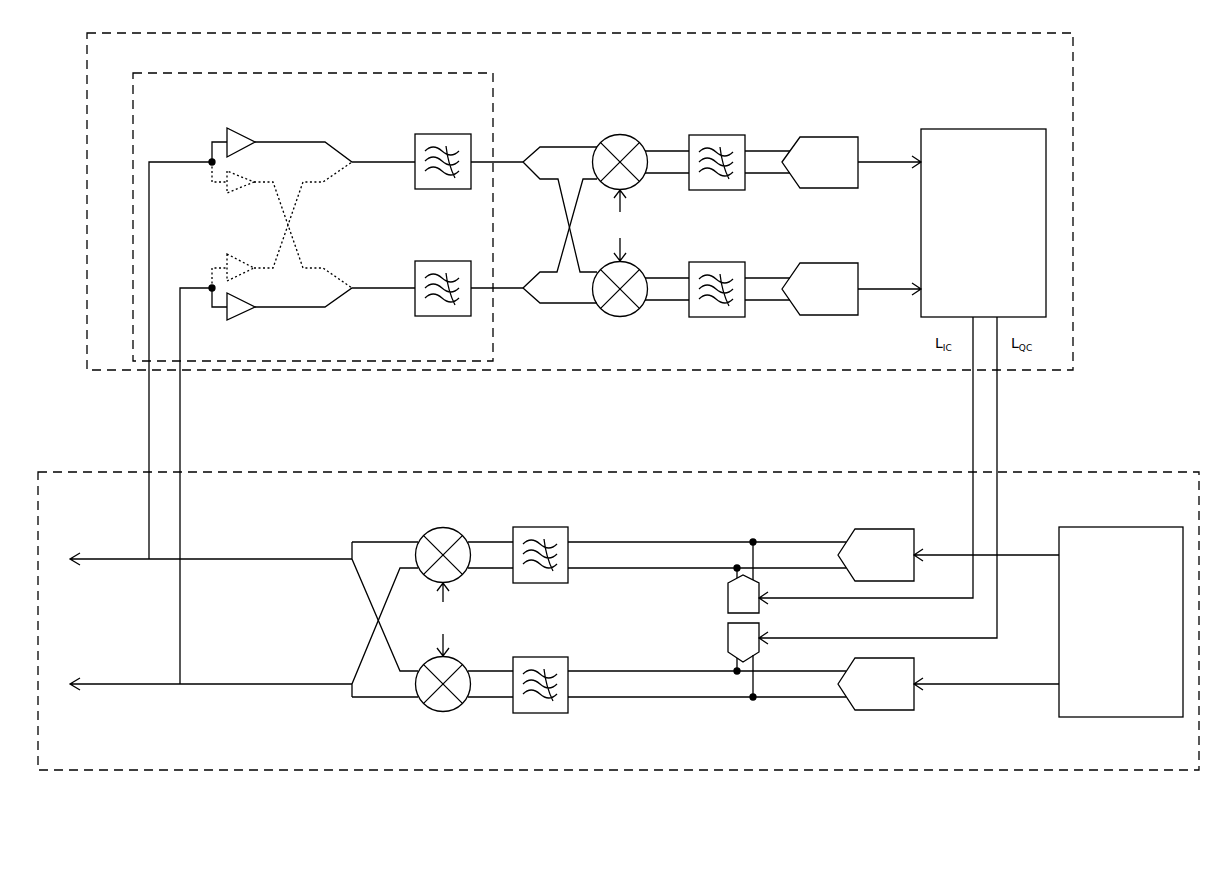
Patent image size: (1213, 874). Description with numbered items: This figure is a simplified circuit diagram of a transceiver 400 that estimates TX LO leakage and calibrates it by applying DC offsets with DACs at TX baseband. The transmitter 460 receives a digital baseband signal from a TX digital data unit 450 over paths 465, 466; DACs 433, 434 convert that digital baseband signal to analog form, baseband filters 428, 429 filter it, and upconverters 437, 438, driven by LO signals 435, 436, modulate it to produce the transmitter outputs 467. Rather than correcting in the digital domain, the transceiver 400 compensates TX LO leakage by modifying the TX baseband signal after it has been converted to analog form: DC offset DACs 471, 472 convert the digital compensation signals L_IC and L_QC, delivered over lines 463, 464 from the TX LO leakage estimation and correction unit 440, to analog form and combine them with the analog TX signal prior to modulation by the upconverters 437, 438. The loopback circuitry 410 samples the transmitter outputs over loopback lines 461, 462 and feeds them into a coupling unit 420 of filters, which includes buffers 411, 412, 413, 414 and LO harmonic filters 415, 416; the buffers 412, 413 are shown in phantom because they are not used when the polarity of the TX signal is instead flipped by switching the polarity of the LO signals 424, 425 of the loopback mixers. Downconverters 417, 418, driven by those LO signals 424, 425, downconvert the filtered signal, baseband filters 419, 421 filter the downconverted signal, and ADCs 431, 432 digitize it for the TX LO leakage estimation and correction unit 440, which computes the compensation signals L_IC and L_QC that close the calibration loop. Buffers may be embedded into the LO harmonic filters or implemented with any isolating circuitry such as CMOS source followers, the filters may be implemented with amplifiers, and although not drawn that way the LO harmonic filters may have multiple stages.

The transceiver 400 is at (1104, 825).
The loop-back circuitry for TX LO leakage calibration 410 is at (580, 201).
The buffer 411 is at (237, 128).
The buffer 412 is at (240, 192).
The buffer 413 is at (240, 258).
The buffer 414 is at (237, 320).
The filter 415 is at (440, 134).
The filter 416 is at (443, 316).
The mixer 417 is at (617, 134).
The mixer 418 is at (617, 317).
The filter 419 is at (714, 135).
The filters 420 is at (313, 217).
The filter 421 is at (714, 317).
The LO signal input to mixer 424 is at (645, 207).
The LO signal input to mixer 425 is at (645, 248).
The filter 428 is at (540, 527).
The filter 429 is at (540, 713).
The ADC 431 is at (851, 162).
The ADC 432 is at (851, 289).
The DAC 433 is at (876, 555).
The DAC 434 is at (876, 684).
The LO signal input to mixer 435 is at (463, 602).
The LO signal input to mixer 436 is at (463, 645).
The upconverter 437 is at (442, 527).
The upconverter 438 is at (442, 712).
The TX LO leakage estimation and correction unit 440 is at (983, 223).
The TX digital data 450 is at (1121, 622).
The transmitter 460 is at (618, 621).
The loop-back line 461 is at (182, 435).
The loop-back line 462 is at (146, 435).
The correction line L_IC 463 is at (971, 435).
The correction line L_QC 464 is at (999, 435).
The digital data line 465 is at (1045, 555).
The digital data line 466 is at (1045, 685).
The transmitter outputs 467 is at (80, 573).
The DC offset DAC 471 is at (725, 602).
The DC offset DAC 472 is at (725, 636).